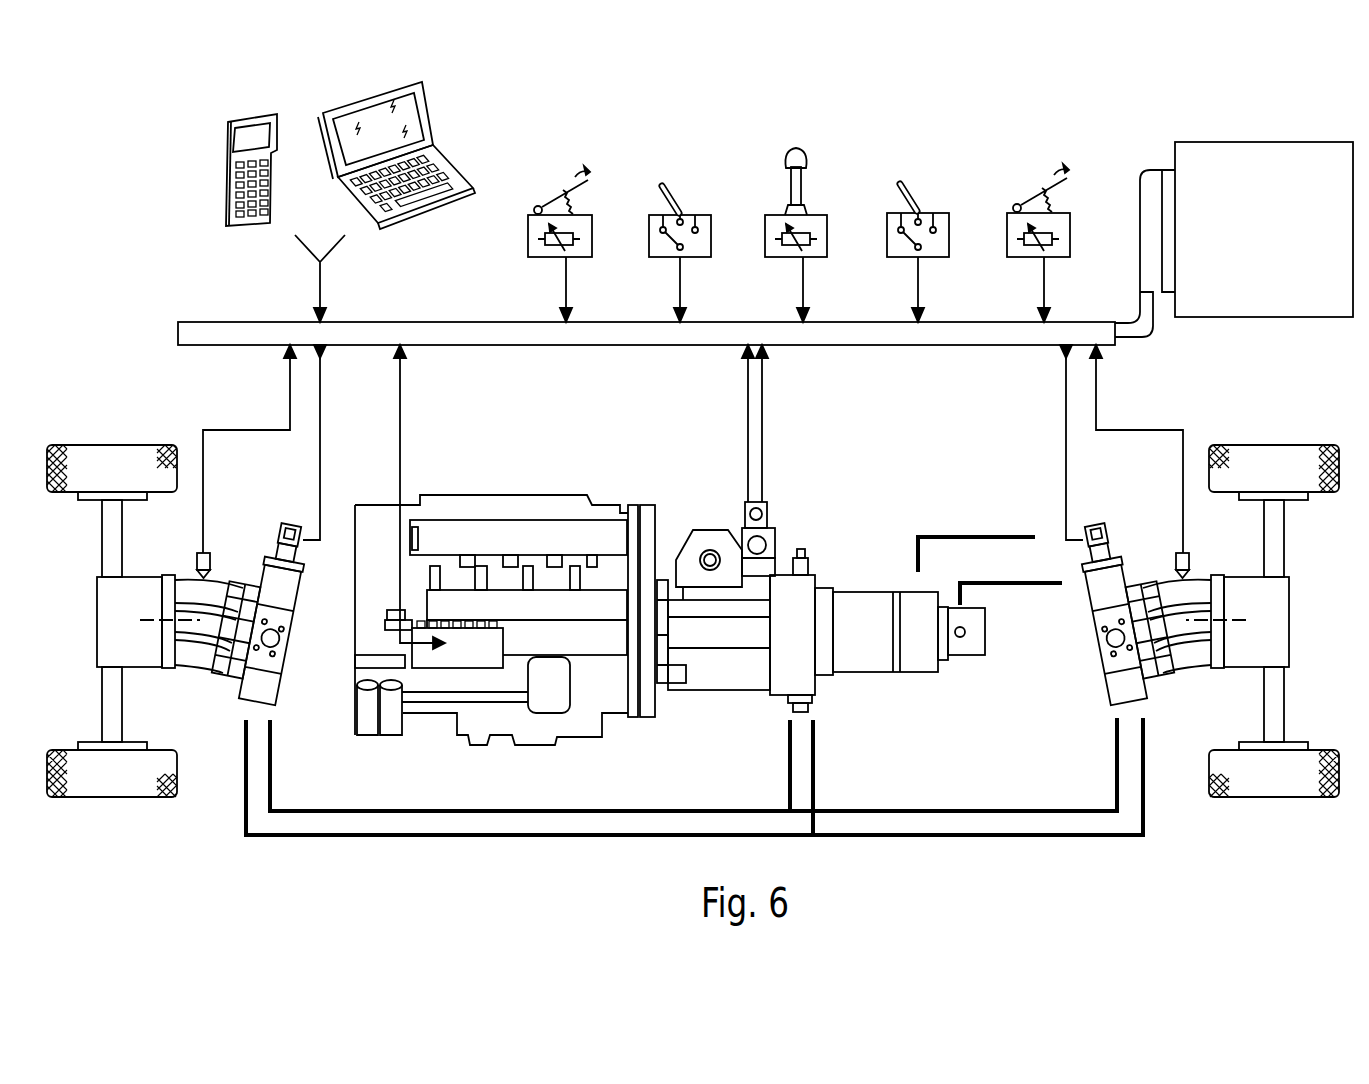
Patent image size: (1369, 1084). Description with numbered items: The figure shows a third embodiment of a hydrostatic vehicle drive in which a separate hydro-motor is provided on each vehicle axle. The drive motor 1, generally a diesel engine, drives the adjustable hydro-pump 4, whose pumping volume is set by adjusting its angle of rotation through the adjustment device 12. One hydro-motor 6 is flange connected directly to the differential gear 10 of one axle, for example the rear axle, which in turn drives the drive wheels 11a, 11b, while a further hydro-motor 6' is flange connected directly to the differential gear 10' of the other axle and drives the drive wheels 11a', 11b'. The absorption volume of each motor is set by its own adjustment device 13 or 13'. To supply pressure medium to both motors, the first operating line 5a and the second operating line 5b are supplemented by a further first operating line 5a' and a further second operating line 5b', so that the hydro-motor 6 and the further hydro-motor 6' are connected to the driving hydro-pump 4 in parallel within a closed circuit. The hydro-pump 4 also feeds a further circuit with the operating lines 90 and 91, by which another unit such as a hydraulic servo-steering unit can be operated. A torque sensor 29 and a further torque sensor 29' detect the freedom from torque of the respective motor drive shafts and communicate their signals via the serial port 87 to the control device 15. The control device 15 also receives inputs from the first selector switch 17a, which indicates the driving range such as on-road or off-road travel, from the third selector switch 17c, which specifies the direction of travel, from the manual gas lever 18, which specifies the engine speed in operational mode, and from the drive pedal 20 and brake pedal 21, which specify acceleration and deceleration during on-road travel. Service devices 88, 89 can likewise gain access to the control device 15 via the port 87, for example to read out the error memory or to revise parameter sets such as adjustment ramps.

The drive motor 1 is at (533, 732).
The hydro-pump 4 is at (723, 670).
The first operating line 5a is at (953, 764).
The second operating line 5b is at (978, 808).
The further first operating line 5a' is at (530, 765).
The further second operating line 5b' is at (529, 809).
The hydro-motor 6 is at (1113, 620).
The further hydro-motor 6' is at (266, 620).
The differential gear 10 is at (1244, 621).
The differential gear 10' is at (140, 621).
The drive wheel 11a is at (1274, 447).
The drive wheel 11b is at (1274, 796).
The drive wheel 11a' is at (112, 447).
The drive wheel 11b' is at (112, 796).
The adjustment device 12 is at (760, 542).
The adjustment device 13 is at (1107, 446).
The adjustment device 13' is at (275, 446).
The control device 15 is at (1250, 243).
The first selector switch 17a is at (703, 215).
The third selector switch 17c is at (940, 213).
The manual gas lever 18 is at (818, 215).
The drive pedal 20 is at (588, 222).
The brake pedal 21 is at (1068, 216).
The torque sensor 29 is at (1167, 461).
The torque sensor 29' is at (218, 461).
The RS 232 port 87 is at (197, 332).
The service device 88 is at (247, 215).
The service device 89 is at (433, 205).
The further operating line 90 is at (988, 535).
The further operating line 91 is at (1013, 586).